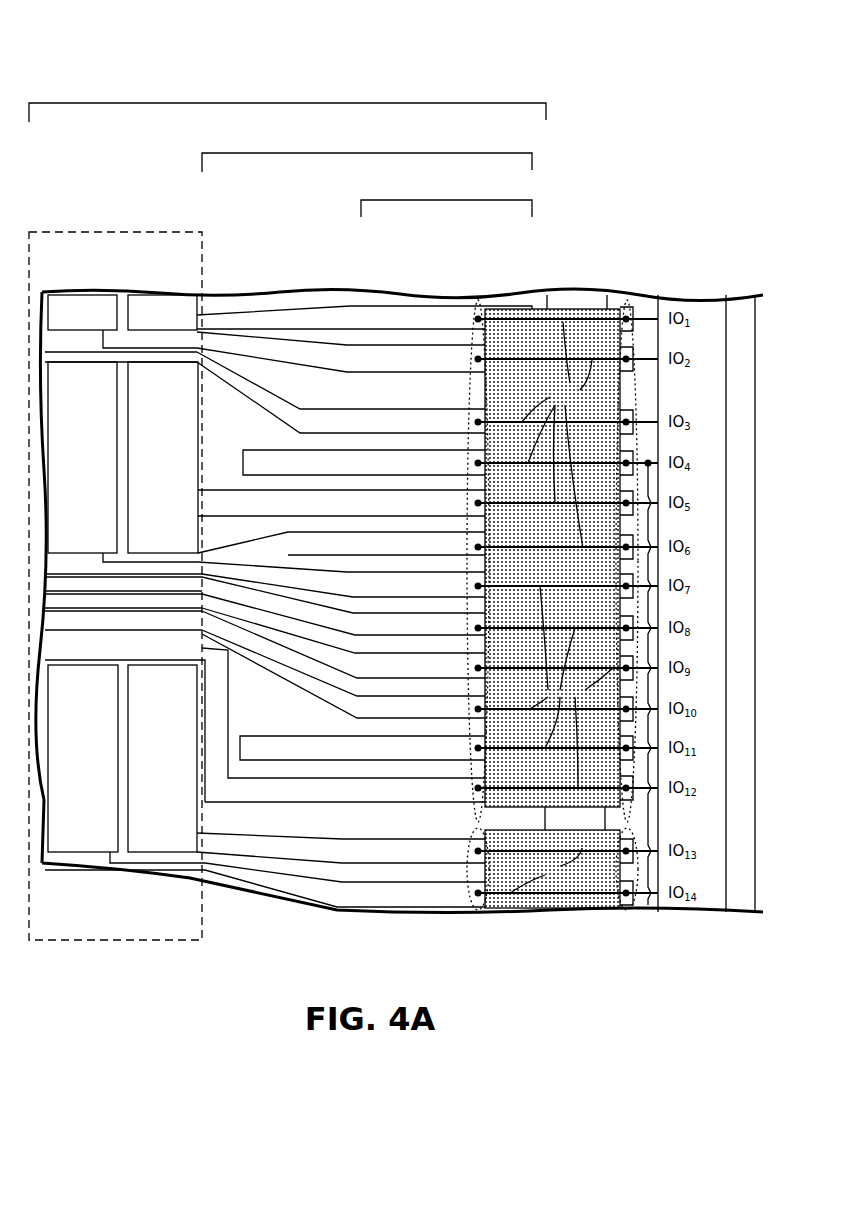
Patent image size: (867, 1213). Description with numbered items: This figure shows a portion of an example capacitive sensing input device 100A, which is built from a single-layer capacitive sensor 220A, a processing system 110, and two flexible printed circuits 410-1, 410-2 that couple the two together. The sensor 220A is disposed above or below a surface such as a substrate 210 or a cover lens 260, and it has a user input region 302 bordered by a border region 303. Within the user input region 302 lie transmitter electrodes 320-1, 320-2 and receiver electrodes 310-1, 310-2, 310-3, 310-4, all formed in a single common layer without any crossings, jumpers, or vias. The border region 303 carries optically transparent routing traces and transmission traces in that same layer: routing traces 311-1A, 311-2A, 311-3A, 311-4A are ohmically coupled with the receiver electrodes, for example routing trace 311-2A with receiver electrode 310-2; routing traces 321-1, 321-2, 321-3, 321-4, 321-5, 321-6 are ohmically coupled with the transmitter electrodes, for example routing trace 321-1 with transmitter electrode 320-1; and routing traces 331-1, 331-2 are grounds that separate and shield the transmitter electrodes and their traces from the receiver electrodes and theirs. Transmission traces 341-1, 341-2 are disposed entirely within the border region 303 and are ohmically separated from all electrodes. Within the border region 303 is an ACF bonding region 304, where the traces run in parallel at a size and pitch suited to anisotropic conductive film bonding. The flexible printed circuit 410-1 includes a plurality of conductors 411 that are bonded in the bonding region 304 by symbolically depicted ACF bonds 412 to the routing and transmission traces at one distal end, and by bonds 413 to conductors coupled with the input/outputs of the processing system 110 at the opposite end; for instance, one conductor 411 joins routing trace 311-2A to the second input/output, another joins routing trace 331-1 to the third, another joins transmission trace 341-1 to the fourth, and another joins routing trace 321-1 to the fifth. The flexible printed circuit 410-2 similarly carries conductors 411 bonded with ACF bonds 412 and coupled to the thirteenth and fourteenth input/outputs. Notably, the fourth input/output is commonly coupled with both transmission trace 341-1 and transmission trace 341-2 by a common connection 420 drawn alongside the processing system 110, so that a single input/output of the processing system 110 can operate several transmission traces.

The capacitive sensing input device 100A is at (80, 58).
The single-layer capacitive sensor 220A is at (248, 103).
The border region 303 is at (248, 153).
The ACF bonding region 304 is at (385, 200).
The user input region 302 is at (110, 232).
The receiver electrode 310-1 is at (142, 325).
The receiver electrode 310-2 is at (62, 325).
The receiver electrode 310-3 is at (142, 787).
The receiver electrode 310-4 is at (63, 787).
The transmitter electrode 320-1 is at (142, 444).
The transmitter electrode 320-2 is at (62, 444).
The routing trace 311-1A is at (372, 327).
The routing trace 311-2A is at (372, 367).
The routing trace 311-3A is at (372, 860).
The routing trace 311-4A is at (372, 900).
The routing trace 331-1 is at (377, 430).
The routing trace 331-2 is at (377, 796).
The transmission trace 341-1 is at (377, 470).
The transmission trace 341-2 is at (377, 756).
The routing trace 321-1 is at (377, 511).
The routing trace 321-2 is at (377, 554).
The routing trace 321-3 is at (377, 593).
The routing trace 321-4 is at (377, 635).
The routing trace 321-5 is at (377, 675).
The routing trace 321-6 is at (377, 716).
The substrate 210 is at (550, 308).
The cover lens 260 is at (553, 277).
The flexible printed circuit 410-1 is at (567, 308).
The flexible printed circuit 410-2 is at (568, 910).
The conductor 411 is at (561, 607).
The ACF bond 412 is at (478, 300).
The bond 413 is at (625, 300).
The processing system 110 is at (658, 300).
The power line 420 is at (648, 900).